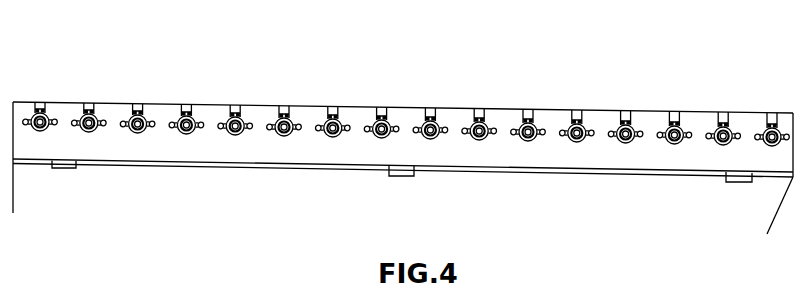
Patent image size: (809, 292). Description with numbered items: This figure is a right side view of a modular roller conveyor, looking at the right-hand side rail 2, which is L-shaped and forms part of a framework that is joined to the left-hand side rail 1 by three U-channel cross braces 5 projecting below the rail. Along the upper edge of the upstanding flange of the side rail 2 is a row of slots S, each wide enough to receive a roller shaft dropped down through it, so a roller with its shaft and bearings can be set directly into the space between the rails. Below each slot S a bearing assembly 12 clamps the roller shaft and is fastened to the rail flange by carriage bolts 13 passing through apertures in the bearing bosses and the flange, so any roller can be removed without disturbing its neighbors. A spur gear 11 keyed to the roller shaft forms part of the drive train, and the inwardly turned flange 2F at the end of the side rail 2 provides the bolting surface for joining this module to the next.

The left-hand side rail 1 is at (552, 112).
The right-hand side rail 2 is at (110, 105).
The inwardly turned flange 2F is at (403, 211).
The U-channel cross brace 5 is at (76, 168).
The spur gear 11 is at (287, 115).
The bearing assembly 12 is at (290, 127).
The carriage bolt 13 is at (176, 120).
The slot S is at (382, 110).